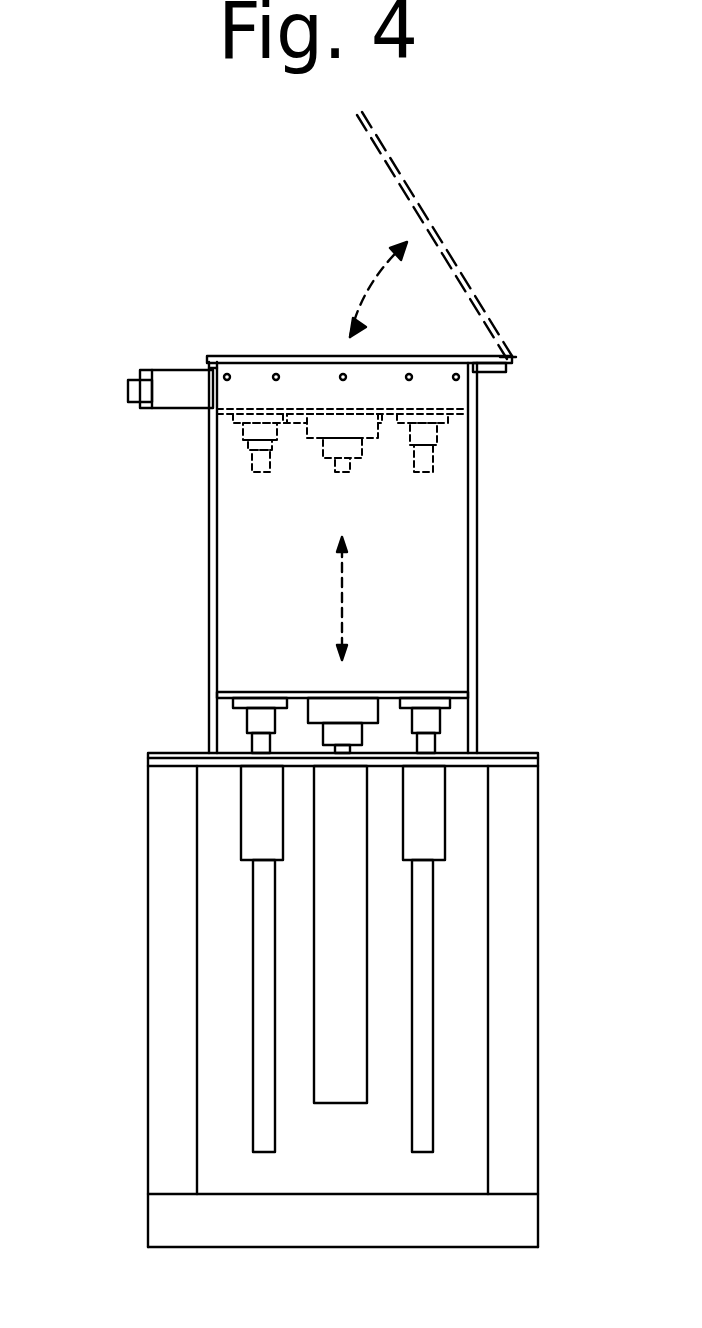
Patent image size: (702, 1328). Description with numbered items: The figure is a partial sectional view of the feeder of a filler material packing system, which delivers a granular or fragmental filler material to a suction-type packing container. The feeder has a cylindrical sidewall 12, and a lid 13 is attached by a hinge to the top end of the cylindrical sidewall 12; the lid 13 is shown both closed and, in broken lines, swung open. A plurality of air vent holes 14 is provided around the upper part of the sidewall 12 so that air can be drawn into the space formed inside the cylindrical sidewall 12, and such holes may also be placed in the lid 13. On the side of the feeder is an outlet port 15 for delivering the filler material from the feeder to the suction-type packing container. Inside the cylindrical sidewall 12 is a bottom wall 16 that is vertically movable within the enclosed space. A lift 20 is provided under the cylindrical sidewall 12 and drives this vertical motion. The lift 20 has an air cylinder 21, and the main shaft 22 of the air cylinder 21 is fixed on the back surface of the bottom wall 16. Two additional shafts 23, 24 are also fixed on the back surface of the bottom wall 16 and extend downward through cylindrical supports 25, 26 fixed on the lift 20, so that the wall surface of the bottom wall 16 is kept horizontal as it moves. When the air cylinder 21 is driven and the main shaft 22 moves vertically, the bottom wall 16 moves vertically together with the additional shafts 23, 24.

The cylindrical sidewall 12 is at (210, 490).
The lid 13 is at (275, 357).
The air vent holes 14 is at (343, 374).
The outlet port 15 is at (187, 408).
The bottom wall 16 is at (393, 690).
The lift 20 is at (135, 900).
The air cylinder 21 is at (353, 897).
The main shaft 22 is at (350, 748).
The additional shaft 23 is at (258, 740).
The additional shaft 24 is at (432, 738).
The cylindrical support 25 is at (250, 805).
The cylindrical support 26 is at (437, 823).